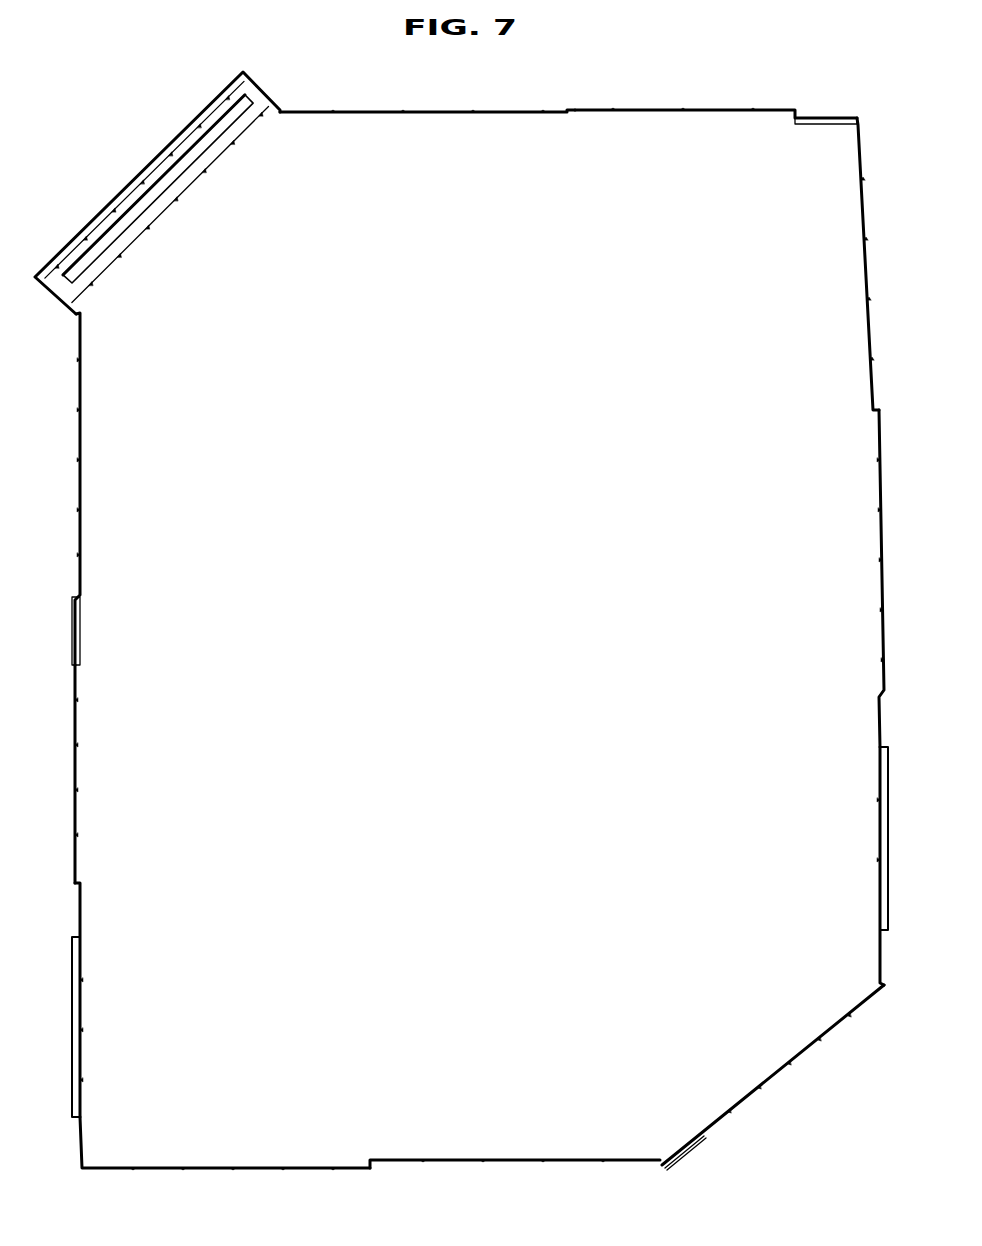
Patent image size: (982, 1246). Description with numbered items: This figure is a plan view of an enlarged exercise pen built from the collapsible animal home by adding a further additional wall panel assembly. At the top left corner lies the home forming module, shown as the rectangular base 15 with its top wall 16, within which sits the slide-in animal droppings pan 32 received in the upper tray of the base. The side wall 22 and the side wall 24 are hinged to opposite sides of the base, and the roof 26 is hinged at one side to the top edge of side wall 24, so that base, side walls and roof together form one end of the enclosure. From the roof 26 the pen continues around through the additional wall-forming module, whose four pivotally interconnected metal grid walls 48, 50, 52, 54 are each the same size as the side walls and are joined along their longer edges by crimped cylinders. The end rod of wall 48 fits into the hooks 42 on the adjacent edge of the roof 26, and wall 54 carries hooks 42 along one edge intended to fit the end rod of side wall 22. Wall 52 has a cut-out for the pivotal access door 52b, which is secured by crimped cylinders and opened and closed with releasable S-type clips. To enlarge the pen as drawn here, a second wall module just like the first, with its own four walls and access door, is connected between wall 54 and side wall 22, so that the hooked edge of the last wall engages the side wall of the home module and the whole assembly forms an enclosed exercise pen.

The base 15 is at (160, 147).
The top wall 16 is at (197, 192).
The animal droppings pan 32 is at (120, 250).
The side wall 22 is at (82, 470).
The side wall 24 is at (450, 111).
The roof 26 is at (684, 109).
The hooks 42 is at (846, 133).
The wall 48 is at (862, 289).
The wall 50 is at (879, 575).
The wall 52 is at (880, 899).
The access door 52b is at (881, 804).
The wall 54 is at (761, 1086).